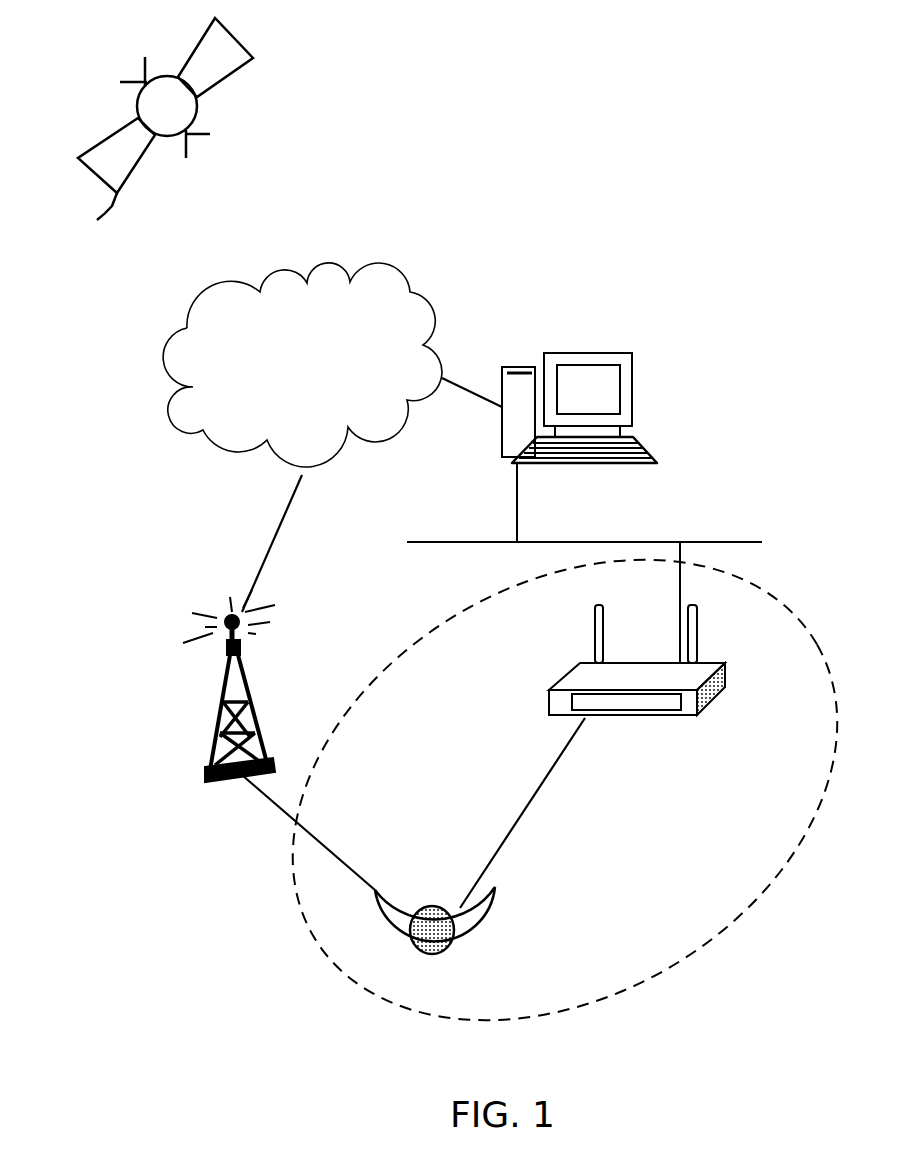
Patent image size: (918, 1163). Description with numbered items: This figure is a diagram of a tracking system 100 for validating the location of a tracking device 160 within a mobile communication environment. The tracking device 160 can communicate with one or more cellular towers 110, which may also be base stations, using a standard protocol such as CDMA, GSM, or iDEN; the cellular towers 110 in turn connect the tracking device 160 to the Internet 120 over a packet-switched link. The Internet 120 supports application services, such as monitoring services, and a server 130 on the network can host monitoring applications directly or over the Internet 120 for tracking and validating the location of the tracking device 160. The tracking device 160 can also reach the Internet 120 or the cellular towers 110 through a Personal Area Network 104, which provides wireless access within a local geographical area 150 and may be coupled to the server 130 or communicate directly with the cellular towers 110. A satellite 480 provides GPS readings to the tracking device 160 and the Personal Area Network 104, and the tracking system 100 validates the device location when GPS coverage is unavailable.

The tracking system 100 is at (538, 255).
The satellite 480 is at (151, 140).
The Internet 120 is at (335, 448).
The server 130 is at (622, 352).
The Personal Area Network (PAN) 104 is at (713, 662).
The cellular towers 110 is at (253, 690).
The tracking device 160 is at (430, 895).
The local geographical area 150 is at (782, 878).